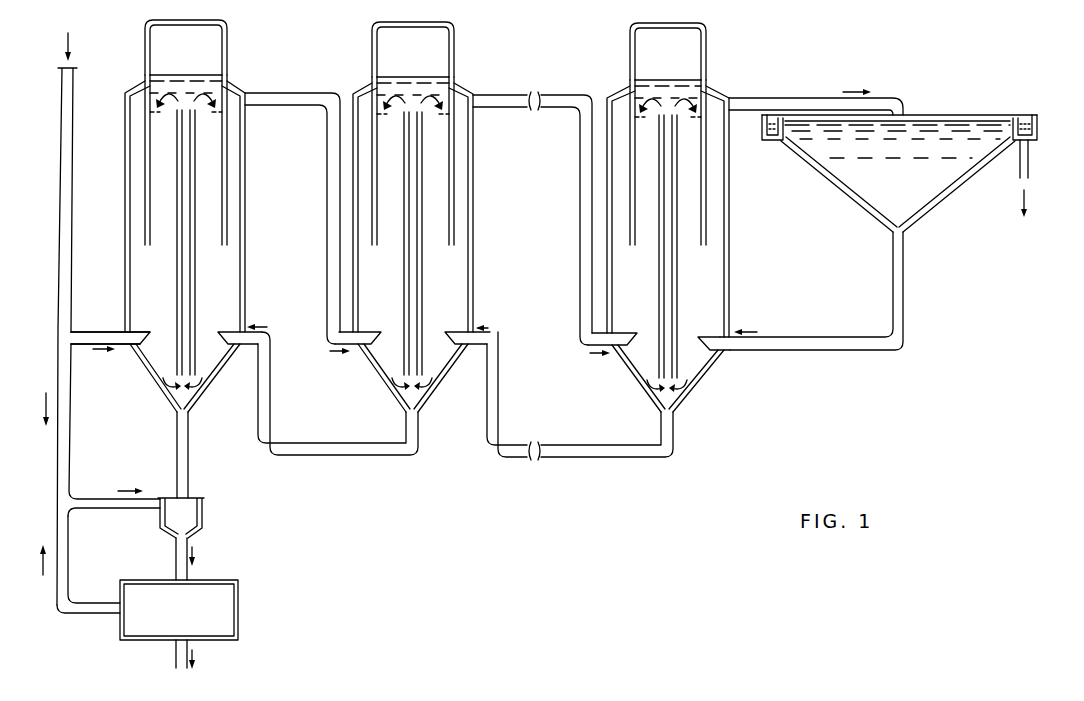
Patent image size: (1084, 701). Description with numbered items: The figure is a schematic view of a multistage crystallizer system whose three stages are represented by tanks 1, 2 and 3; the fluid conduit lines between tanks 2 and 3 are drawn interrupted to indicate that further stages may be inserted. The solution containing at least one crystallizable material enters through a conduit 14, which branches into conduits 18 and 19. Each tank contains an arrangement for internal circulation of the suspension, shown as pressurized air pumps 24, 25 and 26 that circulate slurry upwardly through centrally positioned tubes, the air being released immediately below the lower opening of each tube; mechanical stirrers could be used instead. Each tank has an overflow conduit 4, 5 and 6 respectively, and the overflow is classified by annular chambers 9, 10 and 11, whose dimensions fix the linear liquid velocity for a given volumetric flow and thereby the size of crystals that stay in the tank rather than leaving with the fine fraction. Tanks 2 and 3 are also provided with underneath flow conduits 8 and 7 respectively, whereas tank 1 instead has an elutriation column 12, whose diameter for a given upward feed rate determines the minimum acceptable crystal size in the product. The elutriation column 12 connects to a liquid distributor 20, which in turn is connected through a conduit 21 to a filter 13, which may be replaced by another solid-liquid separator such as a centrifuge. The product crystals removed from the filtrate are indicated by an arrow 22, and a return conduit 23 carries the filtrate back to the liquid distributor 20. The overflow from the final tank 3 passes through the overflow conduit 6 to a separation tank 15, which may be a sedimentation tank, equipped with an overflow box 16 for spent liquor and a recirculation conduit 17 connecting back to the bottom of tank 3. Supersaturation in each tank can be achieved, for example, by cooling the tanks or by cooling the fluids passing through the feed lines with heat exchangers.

The tank 1 is at (166, 225).
The tank 2 is at (400, 227).
The tank 3 is at (661, 229).
The overflow conduit 4 is at (280, 97).
The overflow conduit 5 is at (505, 98).
The overflow conduit 6 is at (784, 99).
The underneath flow conduit 7 is at (567, 452).
The underneath flow conduit 8 is at (322, 448).
The annular chamber 9 is at (142, 216).
The annular chamber 10 is at (358, 205).
The annular chamber 11 is at (629, 217).
The elutriation column 12 is at (188, 463).
The filter 13 is at (187, 622).
The conduit 14 is at (68, 71).
The separation tank 15 is at (899, 173).
The overflow box 16 is at (1038, 178).
The recirculation conduit 17 is at (806, 344).
The conduit 18 is at (95, 336).
The conduit 19 is at (103, 499).
The liquid distributor 20 is at (201, 515).
The conduit 21 is at (176, 558).
The arrow 22 is at (175, 652).
The return conduit 23 is at (64, 538).
The pressurized air pump 24 is at (158, 397).
The pressurized air pump 25 is at (396, 401).
The pressurized air pump 26 is at (646, 404).